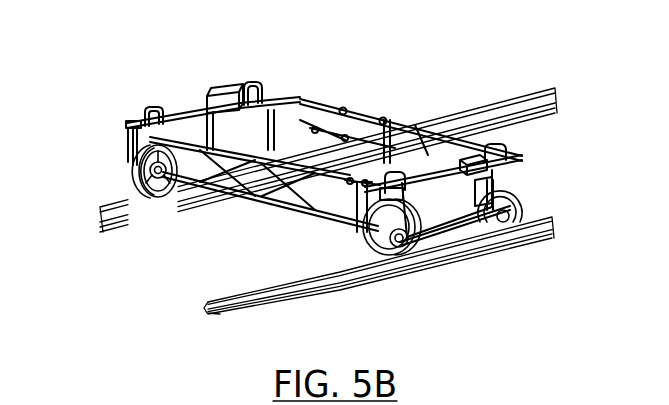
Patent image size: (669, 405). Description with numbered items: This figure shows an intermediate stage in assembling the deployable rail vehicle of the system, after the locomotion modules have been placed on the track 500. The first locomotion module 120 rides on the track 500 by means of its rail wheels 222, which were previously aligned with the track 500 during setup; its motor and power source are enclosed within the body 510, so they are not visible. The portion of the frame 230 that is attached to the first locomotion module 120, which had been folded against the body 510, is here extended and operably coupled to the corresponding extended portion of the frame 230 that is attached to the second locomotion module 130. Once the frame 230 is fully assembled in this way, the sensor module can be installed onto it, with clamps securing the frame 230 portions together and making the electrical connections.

The second locomotion module 130 is at (183, 87).
The track 500 is at (97, 211).
The body 510 is at (447, 188).
The rail wheels 222 is at (515, 212).
The frame 230 is at (270, 211).
The first locomotion module 120 is at (442, 238).